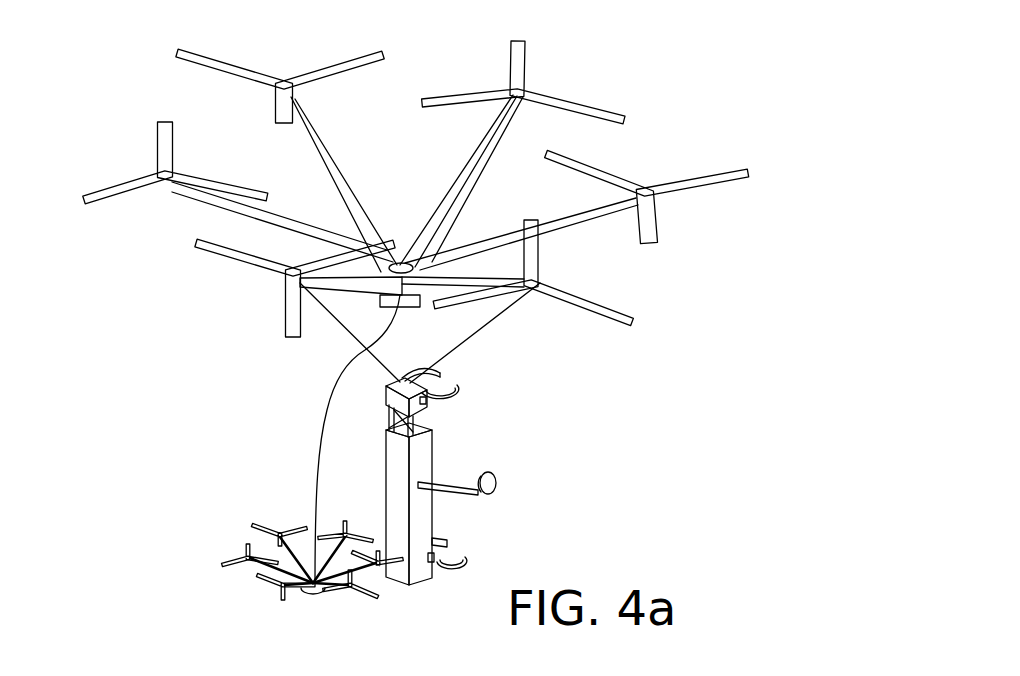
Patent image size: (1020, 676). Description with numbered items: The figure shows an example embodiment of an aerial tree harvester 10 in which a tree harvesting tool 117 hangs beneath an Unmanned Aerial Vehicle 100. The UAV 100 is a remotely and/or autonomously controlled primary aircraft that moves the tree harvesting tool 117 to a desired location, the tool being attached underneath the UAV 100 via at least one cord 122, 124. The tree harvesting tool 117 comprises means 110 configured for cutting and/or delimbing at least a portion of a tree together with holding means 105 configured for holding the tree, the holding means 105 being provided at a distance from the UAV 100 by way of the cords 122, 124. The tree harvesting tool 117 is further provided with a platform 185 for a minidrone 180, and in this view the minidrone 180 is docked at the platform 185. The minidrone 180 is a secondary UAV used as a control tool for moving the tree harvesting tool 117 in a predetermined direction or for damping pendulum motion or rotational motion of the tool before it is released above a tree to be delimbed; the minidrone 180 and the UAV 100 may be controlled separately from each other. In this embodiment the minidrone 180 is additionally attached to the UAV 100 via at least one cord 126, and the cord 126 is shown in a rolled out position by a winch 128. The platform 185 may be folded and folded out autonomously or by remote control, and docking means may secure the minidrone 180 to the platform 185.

The aerial tree harvester 10 is at (74, 123).
The Unmanned Aerial Vehicle (UAV) 100 is at (431, 185).
The holding means 105 is at (460, 393).
The means configured for cutting and/or delimbing 110 is at (422, 457).
The tree harvesting tool 117 is at (520, 516).
The cord 122 is at (462, 337).
The cord 124 is at (358, 348).
The cord 126 is at (315, 447).
The winch 128 is at (382, 298).
The minidrone 180 is at (224, 527).
The platform 185 is at (385, 560).